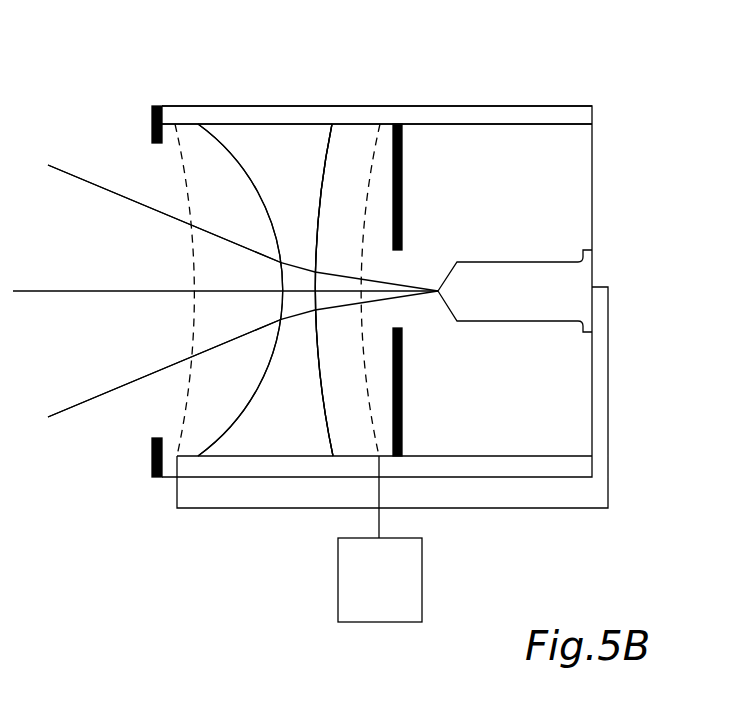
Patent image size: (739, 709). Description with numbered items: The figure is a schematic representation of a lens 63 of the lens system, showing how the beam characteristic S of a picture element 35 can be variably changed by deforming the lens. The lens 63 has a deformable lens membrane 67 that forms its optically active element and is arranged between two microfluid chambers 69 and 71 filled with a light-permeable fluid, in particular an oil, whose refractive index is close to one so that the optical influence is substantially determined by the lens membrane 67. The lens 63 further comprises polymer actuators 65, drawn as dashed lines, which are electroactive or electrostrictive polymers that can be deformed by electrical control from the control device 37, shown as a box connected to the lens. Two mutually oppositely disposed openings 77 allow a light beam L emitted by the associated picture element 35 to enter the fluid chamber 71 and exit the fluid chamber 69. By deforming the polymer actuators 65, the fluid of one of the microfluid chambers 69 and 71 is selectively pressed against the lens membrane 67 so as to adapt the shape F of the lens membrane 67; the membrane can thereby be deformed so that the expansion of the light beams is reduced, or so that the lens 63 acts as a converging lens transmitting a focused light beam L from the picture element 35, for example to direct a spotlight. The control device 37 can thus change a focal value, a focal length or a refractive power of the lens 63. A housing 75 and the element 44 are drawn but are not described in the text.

The lens 63 is at (200, 101).
The polymer actuators 65 is at (172, 128).
The lens membrane 67 is at (280, 153).
The microfluid chamber 69 is at (210, 173).
The microfluid chamber 71 is at (334, 180).
The housing 75 is at (485, 115).
The openings 77 is at (141, 241).
The picture element 35 is at (515, 258).
The light guide 44 is at (543, 275).
The control device 37 is at (398, 595).
The beam characteristic S is at (336, 258).
The light beam L is at (85, 178).
The shape F is at (228, 383).